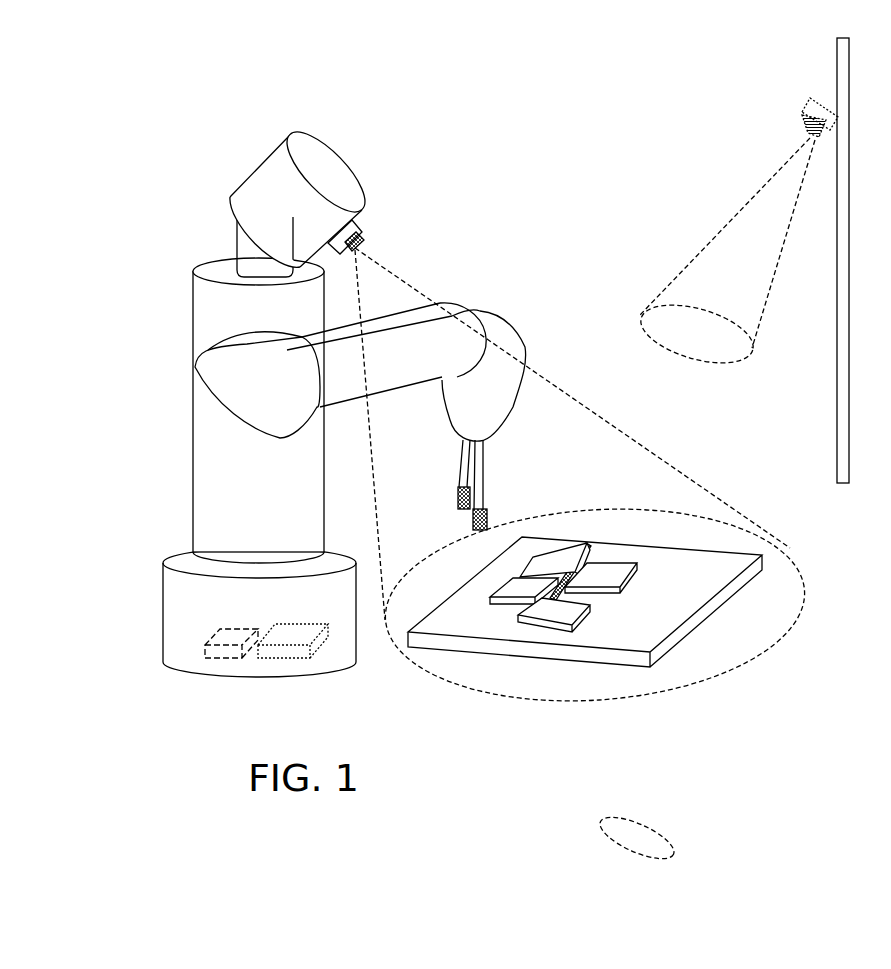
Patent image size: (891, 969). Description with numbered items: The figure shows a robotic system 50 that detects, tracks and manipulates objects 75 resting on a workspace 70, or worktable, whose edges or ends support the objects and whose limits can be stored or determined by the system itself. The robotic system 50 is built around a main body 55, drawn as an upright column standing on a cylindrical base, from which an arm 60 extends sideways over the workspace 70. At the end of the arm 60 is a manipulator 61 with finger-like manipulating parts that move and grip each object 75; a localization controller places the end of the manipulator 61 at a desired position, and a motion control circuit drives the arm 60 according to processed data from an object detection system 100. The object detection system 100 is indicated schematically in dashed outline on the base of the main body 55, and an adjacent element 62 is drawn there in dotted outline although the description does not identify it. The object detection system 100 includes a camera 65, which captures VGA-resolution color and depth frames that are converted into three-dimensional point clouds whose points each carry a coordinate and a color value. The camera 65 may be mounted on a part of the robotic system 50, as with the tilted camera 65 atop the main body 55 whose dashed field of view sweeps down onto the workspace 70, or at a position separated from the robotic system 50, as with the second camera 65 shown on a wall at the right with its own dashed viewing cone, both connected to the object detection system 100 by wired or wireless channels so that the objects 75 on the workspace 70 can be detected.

The robotic system 50 is at (59, 113).
The main body 55 is at (188, 437).
The arm 60 is at (523, 338).
The manipulator 61 is at (468, 525).
The memory 62 is at (310, 647).
The camera 65 is at (370, 217).
The workspace 70 is at (667, 647).
The objects 75 is at (640, 578).
The object detection system 100 is at (203, 638).